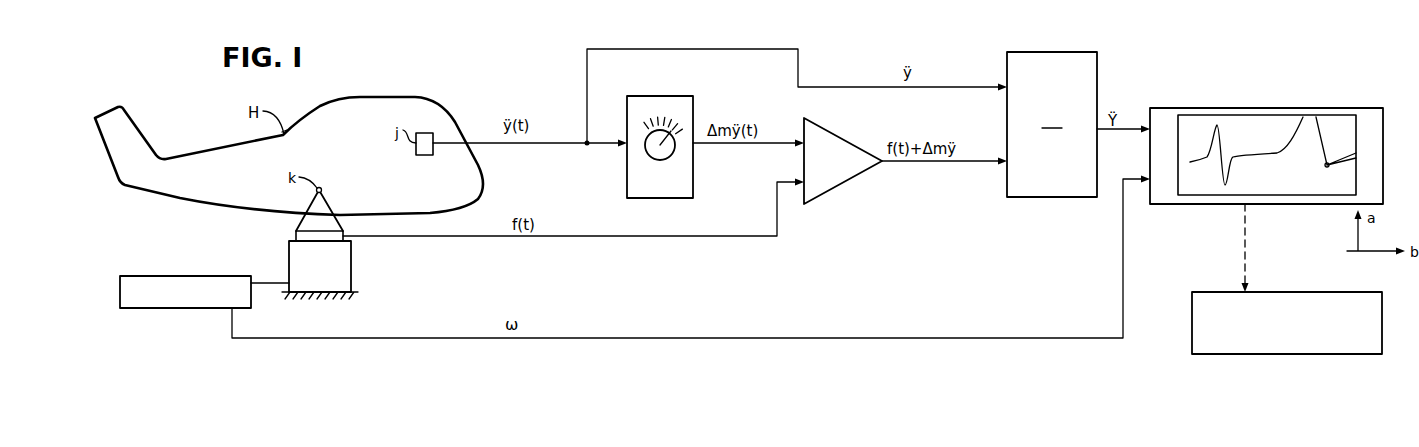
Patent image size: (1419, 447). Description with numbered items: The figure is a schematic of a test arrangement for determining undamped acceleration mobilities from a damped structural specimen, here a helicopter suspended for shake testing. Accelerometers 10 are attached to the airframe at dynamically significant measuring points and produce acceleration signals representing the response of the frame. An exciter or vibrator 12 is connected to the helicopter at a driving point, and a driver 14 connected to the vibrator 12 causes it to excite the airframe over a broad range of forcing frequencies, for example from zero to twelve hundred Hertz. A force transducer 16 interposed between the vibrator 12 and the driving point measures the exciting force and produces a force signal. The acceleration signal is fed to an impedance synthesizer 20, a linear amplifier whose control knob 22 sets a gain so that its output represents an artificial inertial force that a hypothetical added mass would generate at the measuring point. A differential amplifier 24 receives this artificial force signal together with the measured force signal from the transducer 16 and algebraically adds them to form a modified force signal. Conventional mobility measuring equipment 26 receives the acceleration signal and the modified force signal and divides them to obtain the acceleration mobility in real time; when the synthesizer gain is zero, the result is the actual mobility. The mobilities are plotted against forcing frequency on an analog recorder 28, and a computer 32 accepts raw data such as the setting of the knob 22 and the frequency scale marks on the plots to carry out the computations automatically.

The accelerometer 10 is at (427, 133).
The vibrator 12 is at (351, 271).
The driver 14 is at (141, 276).
The force transducer 16 is at (296, 236).
The impedance synthesizer 20 is at (641, 133).
The control knob 22 is at (653, 150).
The differential amplifier 24 is at (835, 142).
The mobility measuring equipment 26 is at (1087, 52).
The analog recorder 28 is at (1335, 108).
The computer 32 is at (1303, 354).